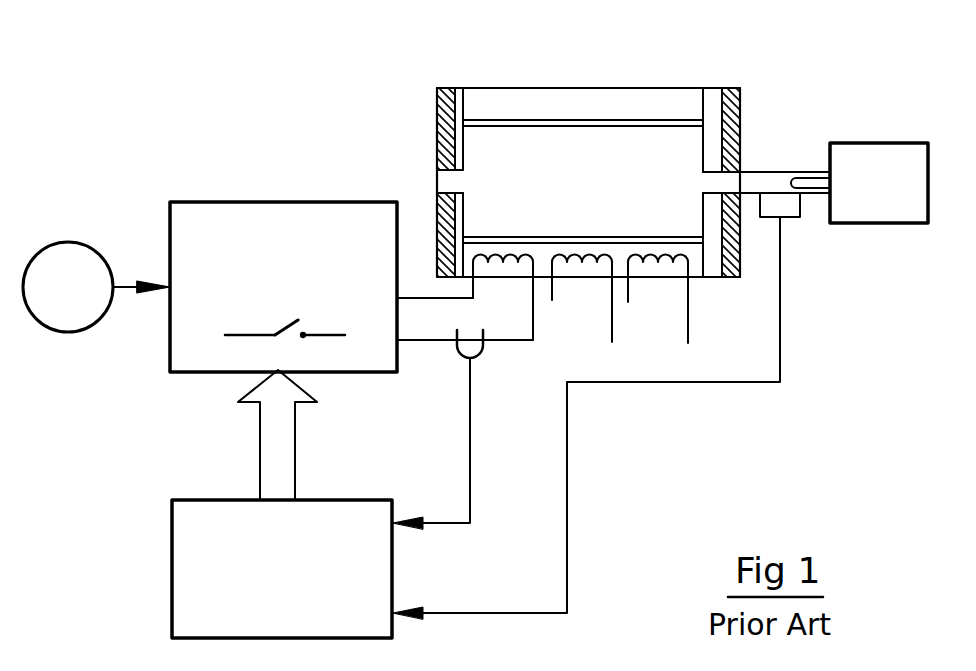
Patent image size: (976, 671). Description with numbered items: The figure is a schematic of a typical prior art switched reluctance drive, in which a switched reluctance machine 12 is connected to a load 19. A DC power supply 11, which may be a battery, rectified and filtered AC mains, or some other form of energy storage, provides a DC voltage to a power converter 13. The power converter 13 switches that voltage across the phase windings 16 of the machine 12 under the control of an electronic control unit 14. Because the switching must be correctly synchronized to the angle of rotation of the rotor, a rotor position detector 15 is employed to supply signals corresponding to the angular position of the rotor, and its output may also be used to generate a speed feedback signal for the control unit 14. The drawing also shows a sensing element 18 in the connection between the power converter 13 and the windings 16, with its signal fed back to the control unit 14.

The DC power supply 11 is at (67, 238).
The switched reluctance machine 12 is at (543, 88).
The power converter 13 is at (220, 200).
The electronic control unit 14 is at (167, 523).
The rotor position detector 15 is at (778, 207).
The phase windings 16 is at (664, 257).
The current sensor 18 is at (485, 350).
The load 19 is at (845, 155).